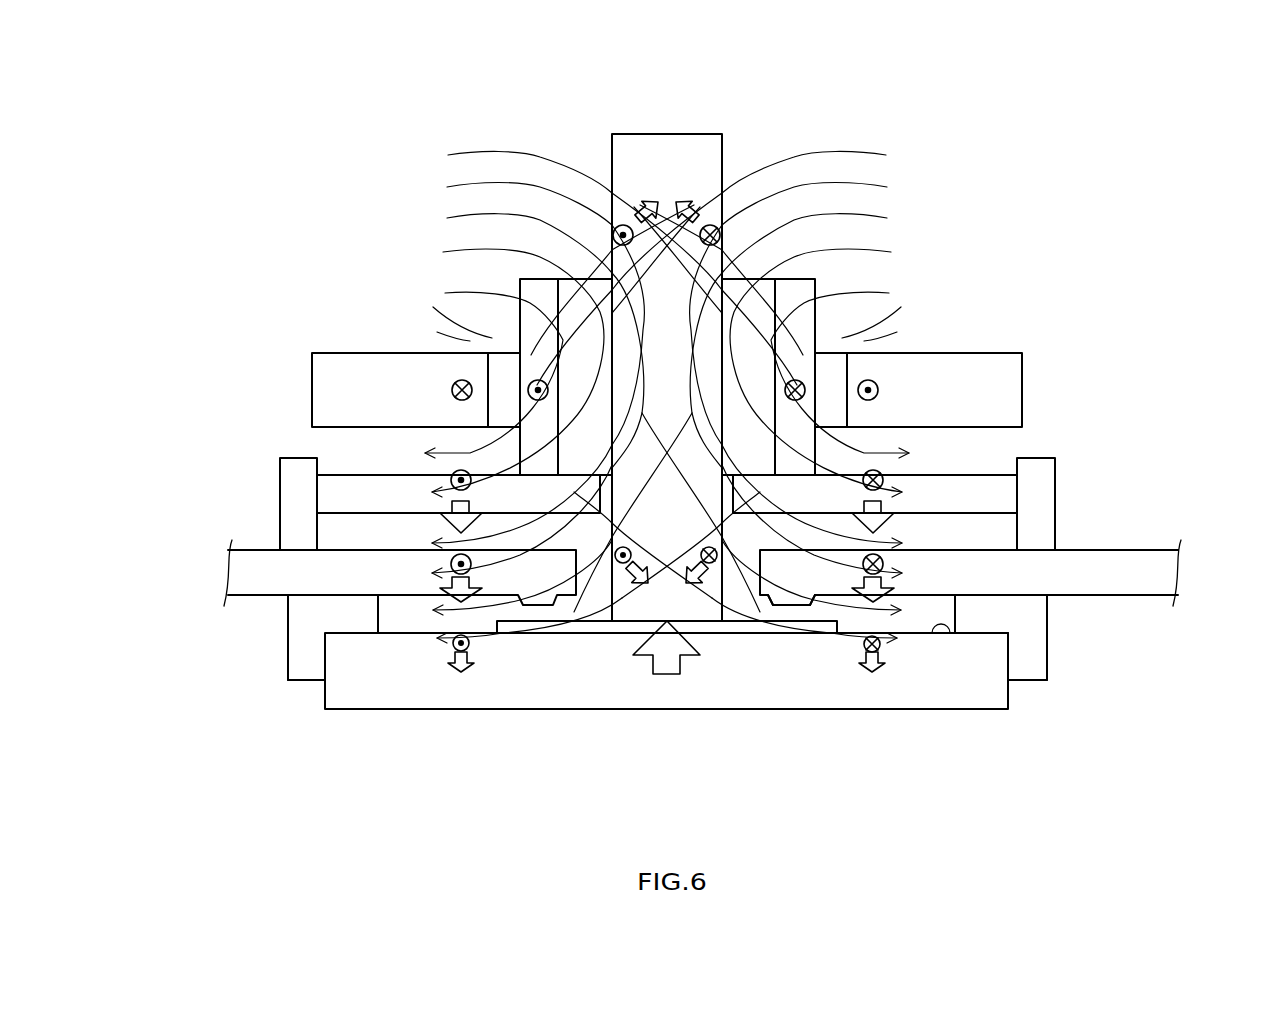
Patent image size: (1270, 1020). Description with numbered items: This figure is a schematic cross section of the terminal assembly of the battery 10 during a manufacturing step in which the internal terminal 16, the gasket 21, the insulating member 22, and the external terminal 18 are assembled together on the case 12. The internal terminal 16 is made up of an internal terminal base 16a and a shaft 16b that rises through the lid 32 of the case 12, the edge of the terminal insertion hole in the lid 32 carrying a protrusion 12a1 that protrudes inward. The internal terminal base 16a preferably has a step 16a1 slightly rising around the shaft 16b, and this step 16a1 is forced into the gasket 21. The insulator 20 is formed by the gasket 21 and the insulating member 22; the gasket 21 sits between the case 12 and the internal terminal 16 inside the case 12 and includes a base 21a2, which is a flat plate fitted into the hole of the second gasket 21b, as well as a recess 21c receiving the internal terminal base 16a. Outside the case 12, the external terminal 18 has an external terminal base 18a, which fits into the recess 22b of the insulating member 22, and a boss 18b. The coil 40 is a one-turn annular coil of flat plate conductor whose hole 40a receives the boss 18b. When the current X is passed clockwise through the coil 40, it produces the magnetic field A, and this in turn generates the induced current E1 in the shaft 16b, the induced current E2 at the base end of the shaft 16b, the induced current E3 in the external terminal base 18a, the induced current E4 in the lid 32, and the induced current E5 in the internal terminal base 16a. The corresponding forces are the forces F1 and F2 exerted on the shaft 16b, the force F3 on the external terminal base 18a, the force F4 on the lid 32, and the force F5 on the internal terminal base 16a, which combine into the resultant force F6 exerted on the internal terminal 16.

The battery 10 is at (295, 132).
The case 12 is at (1180, 535).
The protrusion 12a1 is at (802, 612).
The internal terminal 16 is at (1022, 715).
The internal terminal base 16a is at (950, 635).
The step 16a1 is at (500, 625).
The shaft 16b is at (723, 147).
The external terminal 18 is at (1042, 408).
The external terminal base 18a is at (990, 476).
The boss 18b is at (815, 300).
The insulator 20 is at (248, 707).
The gasket 21 is at (1063, 670).
The base 21a2 is at (815, 597).
The second gasket 21b is at (1047, 608).
The recess 21c is at (325, 657).
The insulating member 22 is at (1057, 500).
The recess 22b is at (318, 497).
The lid 32 is at (1140, 550).
The coil 40 is at (980, 353).
The hole 40a is at (508, 352).
The magnetic field A is at (868, 157).
The current X is at (453, 382).
The induced current E1 is at (613, 232).
The induced current E2 is at (620, 565).
The induced current E3 is at (450, 480).
The induced current E4 is at (451, 562).
The induced current E5 is at (454, 647).
The force F1 is at (694, 180).
The force F2 is at (645, 586).
The force F3 is at (450, 522).
The force F4 is at (450, 590).
The force F5 is at (458, 670).
The resultant force F6 is at (670, 676).